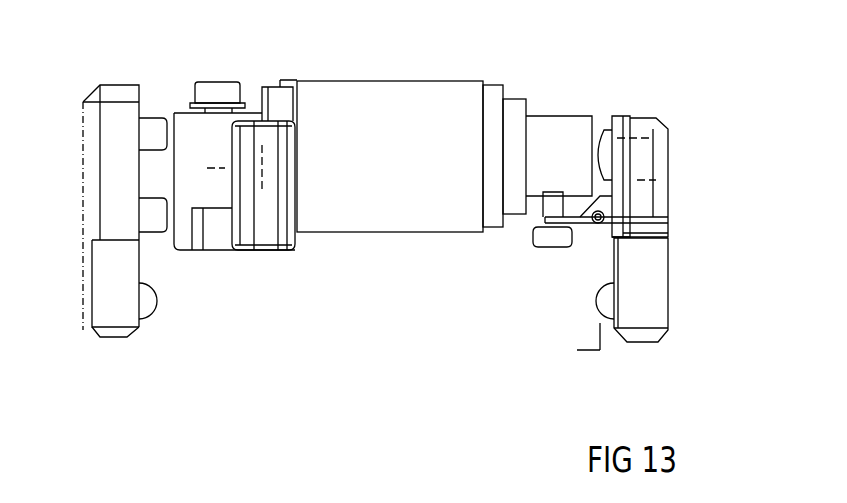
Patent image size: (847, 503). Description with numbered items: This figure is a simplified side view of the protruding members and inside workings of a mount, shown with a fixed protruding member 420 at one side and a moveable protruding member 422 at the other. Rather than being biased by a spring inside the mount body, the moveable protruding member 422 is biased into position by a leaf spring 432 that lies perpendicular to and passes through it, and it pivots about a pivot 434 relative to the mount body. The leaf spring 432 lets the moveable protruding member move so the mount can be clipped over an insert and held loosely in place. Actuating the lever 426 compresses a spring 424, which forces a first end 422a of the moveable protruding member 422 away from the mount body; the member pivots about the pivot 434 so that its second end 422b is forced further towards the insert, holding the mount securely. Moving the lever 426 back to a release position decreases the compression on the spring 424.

The left mounting block 420 is at (107, 127).
The moveable protruding member 422 is at (688, 232).
The first end of the moveable protruding member 422a is at (657, 138).
The second end of the moveable protruding member 422b is at (653, 312).
The spring 424 is at (398, 108).
The lever 426 is at (215, 260).
The leaf spring 432 is at (535, 213).
The pivot 434 is at (603, 218).